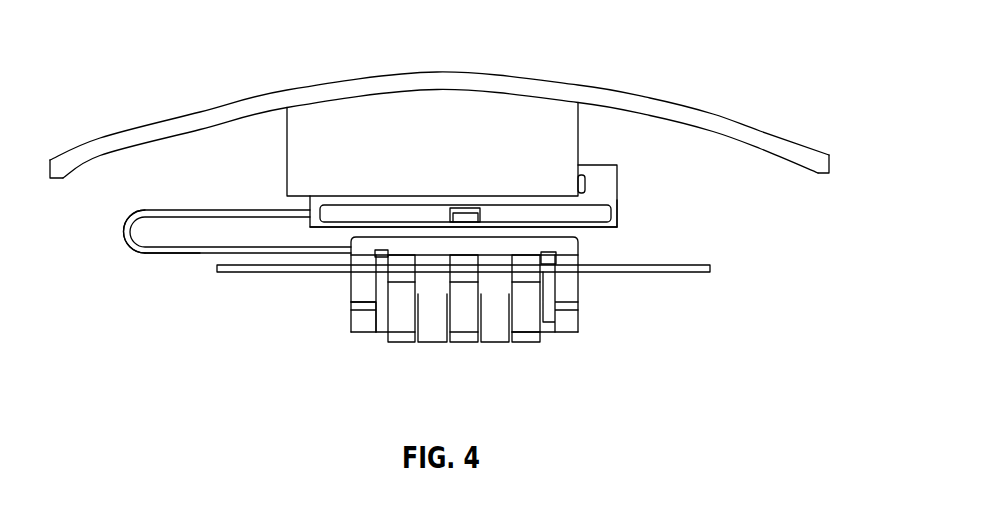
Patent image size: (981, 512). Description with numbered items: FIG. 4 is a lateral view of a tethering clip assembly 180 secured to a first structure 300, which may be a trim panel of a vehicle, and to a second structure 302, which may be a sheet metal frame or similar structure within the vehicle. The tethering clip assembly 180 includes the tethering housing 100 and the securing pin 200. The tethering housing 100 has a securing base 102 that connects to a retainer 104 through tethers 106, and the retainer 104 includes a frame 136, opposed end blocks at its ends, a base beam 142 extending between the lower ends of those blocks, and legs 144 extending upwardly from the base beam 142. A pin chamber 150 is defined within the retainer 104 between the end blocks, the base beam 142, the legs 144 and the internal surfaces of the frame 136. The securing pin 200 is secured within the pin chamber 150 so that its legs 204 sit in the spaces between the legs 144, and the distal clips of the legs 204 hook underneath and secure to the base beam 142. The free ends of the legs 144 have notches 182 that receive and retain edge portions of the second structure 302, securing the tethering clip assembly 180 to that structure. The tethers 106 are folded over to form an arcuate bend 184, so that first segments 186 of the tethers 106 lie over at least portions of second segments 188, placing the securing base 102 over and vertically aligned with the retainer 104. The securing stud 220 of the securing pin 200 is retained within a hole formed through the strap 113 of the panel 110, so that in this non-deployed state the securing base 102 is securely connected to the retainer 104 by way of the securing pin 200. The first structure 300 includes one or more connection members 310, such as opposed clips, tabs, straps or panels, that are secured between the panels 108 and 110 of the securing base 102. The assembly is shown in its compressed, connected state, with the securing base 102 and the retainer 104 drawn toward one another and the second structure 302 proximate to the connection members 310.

The tethering housing 100 is at (618, 196).
The securing base 102 is at (615, 227).
The retainer 104 is at (580, 322).
The tethers 106 is at (153, 255).
The panel 108 is at (578, 140).
The panel 110 is at (600, 233).
The strap 113 is at (572, 226).
The frame 136 is at (400, 244).
The base beam 142 is at (528, 309).
The legs 144 is at (401, 308).
The pin chamber 150 is at (377, 318).
The tethering clip assembly 180 is at (189, 248).
The notches 182 is at (398, 255).
The arcuate bend 184 is at (123, 238).
The first segments 186 is at (165, 208).
The second segments 188 is at (235, 247).
The securing pin 200 is at (547, 223).
The legs 204 is at (495, 334).
The securing stud 220 is at (478, 213).
The first structure 300 is at (732, 108).
The second structure 302 is at (709, 274).
The connection members 310 is at (597, 165).